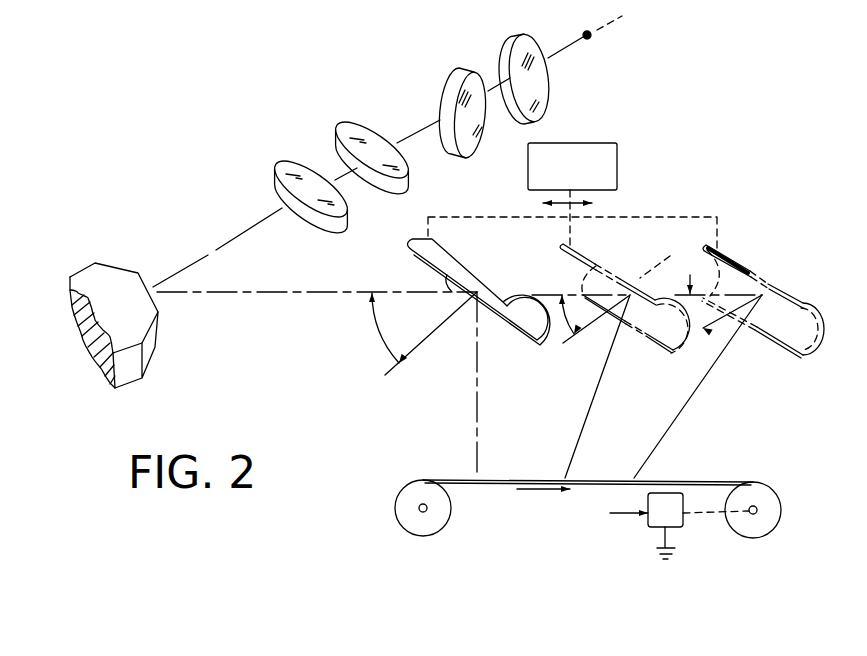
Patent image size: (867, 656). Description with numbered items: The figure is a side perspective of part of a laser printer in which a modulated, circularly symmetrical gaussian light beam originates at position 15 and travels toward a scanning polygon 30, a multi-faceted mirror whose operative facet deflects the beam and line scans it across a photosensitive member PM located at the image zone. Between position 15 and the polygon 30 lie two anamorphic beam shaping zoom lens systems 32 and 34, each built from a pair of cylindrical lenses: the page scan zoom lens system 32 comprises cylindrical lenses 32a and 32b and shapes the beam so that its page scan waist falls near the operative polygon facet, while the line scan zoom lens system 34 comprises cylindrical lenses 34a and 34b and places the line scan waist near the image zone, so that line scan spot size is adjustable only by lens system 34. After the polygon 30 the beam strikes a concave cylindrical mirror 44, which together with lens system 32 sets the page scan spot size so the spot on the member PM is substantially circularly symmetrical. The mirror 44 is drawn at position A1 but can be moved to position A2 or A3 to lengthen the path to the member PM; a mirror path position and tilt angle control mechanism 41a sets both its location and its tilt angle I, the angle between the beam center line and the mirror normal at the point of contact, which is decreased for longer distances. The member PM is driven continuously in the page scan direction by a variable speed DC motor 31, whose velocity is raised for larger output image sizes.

The scanning polygon 30 is at (157, 335).
The variable speed DC motor 31 is at (676, 522).
The page scan zoom lens system 32 is at (475, 50).
The cylindrical lens 32a is at (445, 80).
The cylindrical lens 32b is at (543, 48).
The beam position 15 is at (588, 40).
The line scan zoom lens system 34 is at (305, 138).
The cylindrical lens 34a is at (379, 144).
The cylindrical lens 34b is at (275, 182).
The mirror path position and tilt angle control mechanism 41a is at (586, 177).
The concave cylindrical mirror 44 is at (493, 286).
The first mirror position A1 is at (459, 348).
The second mirror position A2 is at (611, 349).
The third mirror position A3 is at (668, 254).
The tilt angle I is at (423, 385).
The photosensitive member PM is at (690, 478).